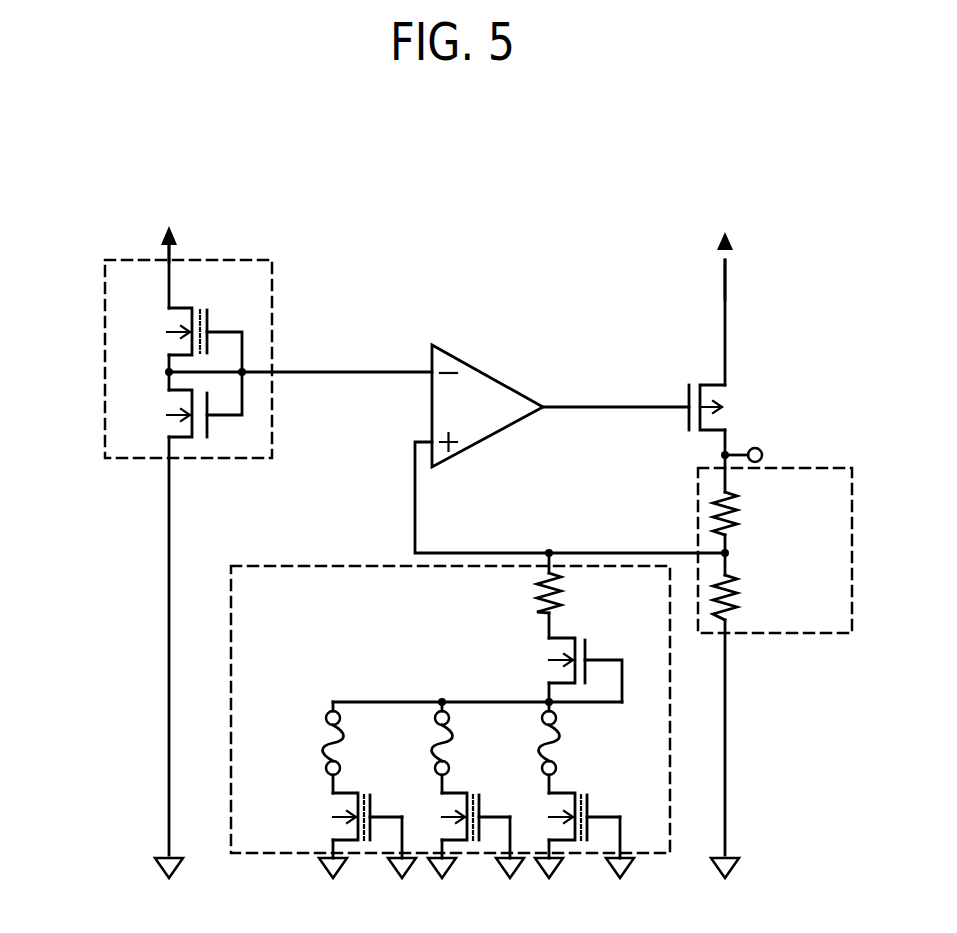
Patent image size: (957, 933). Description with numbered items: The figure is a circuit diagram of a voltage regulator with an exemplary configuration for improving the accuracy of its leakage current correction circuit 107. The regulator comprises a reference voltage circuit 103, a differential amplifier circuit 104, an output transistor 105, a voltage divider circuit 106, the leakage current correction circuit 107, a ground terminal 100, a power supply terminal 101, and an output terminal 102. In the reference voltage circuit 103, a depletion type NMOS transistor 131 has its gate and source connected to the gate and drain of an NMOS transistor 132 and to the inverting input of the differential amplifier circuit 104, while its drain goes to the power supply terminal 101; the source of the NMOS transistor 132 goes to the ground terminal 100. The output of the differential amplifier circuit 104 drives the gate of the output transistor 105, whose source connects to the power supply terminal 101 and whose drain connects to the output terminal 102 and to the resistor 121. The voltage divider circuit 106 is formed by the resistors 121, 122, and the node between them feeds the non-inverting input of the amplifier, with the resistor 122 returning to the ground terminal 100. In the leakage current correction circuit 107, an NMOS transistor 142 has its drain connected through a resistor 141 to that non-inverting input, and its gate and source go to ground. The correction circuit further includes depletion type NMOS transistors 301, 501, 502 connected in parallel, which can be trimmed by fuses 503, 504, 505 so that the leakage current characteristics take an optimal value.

The ground terminal 100 is at (156, 859).
The power supply terminal 101 is at (718, 247).
The output terminal 102 is at (758, 447).
The reference voltage circuit 103 is at (192, 263).
The differential amplifier circuit 104 is at (483, 370).
The output transistor 105 is at (729, 401).
The voltage divider circuit 106 is at (782, 627).
The leakage current correction circuit 107 is at (280, 573).
The resistor 121 is at (743, 507).
The resistor 122 is at (743, 593).
The depletion type NMOS transistor 131 is at (182, 303).
The NMOS transistor 132 is at (187, 440).
The resistor 141 is at (570, 596).
The NMOS transistor 142 is at (549, 659).
The depletion type NMOS transistor 301 is at (548, 808).
The depletion type NMOS transistor 501 is at (437, 806).
The depletion type NMOS transistor 502 is at (331, 810).
The fuse 503 is at (545, 745).
The fuse 504 is at (435, 745).
The fuse 505 is at (328, 745).